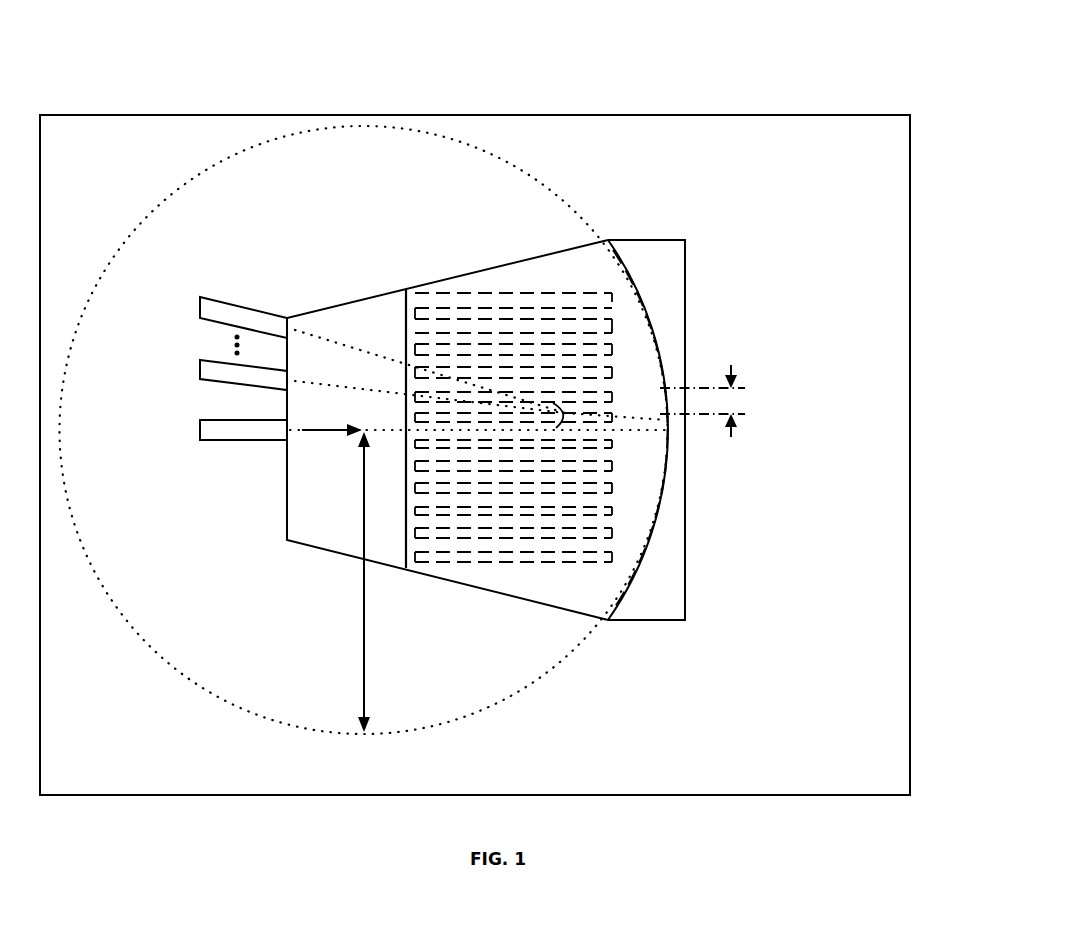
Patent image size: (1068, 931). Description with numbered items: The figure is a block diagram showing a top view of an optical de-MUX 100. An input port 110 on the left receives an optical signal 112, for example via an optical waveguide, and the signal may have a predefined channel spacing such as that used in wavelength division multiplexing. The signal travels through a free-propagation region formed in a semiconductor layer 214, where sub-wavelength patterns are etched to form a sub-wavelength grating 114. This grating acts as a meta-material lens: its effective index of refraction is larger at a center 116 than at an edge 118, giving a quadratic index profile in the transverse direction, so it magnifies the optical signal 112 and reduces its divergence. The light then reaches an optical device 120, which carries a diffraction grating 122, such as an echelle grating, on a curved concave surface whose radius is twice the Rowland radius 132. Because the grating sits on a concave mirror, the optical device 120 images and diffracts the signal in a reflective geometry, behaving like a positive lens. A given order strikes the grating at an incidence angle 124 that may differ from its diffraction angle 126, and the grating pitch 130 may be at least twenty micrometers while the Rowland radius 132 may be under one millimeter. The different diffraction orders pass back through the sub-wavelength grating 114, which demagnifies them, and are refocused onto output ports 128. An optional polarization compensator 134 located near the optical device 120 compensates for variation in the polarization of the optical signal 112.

The optical de-MUX 100 is at (907, 68).
The input port 110 is at (222, 427).
The optical signal 112 is at (335, 431).
The sub-wavelength grating 114 is at (612, 230).
The center 116 is at (613, 430).
The edge 118 is at (480, 563).
The optical device 120 is at (708, 620).
The diffraction grating 122 is at (658, 348).
The incidence angle 124 is at (562, 424).
The diffraction angle 126 is at (553, 403).
The output ports 128 is at (240, 375).
The grating pitch 130 is at (732, 401).
The Rowland radius 132 is at (363, 577).
The polarization compensator 134 is at (348, 480).
The semiconductor layer 214 is at (475, 455).